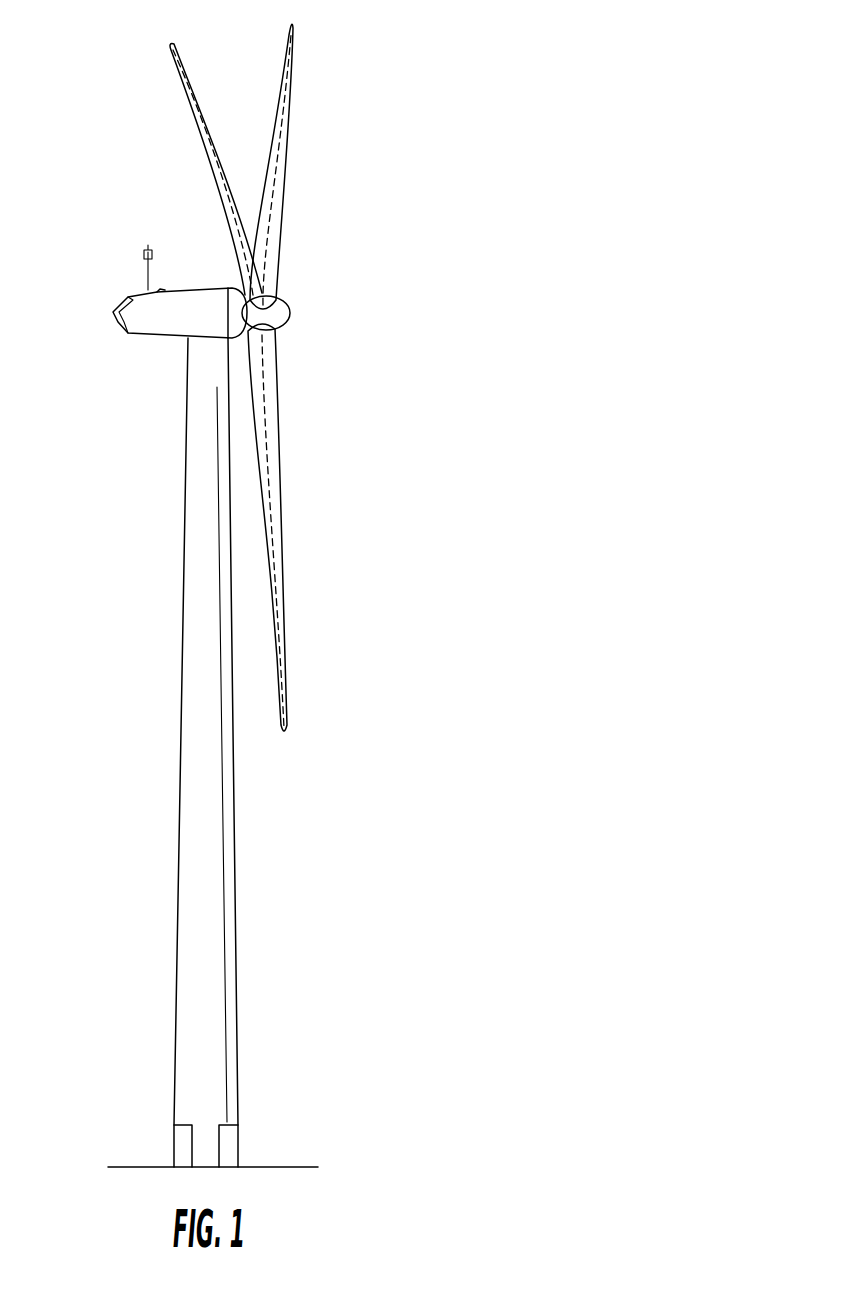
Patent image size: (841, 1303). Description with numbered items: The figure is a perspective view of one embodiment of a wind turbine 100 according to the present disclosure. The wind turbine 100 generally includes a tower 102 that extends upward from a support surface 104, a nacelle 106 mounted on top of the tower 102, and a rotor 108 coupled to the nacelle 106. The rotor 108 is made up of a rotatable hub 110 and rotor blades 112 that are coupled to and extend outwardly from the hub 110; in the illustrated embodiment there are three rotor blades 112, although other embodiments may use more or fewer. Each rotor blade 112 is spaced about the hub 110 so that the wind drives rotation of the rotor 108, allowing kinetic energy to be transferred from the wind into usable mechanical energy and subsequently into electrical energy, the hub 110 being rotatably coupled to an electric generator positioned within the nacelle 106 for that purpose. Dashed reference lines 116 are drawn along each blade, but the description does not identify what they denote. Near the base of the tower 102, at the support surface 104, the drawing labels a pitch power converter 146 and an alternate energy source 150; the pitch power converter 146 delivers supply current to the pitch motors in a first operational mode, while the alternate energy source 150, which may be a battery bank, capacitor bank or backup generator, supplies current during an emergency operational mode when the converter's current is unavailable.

The wind turbine 100 is at (424, 150).
The tower 102 is at (212, 817).
The support surface 104 is at (132, 1167).
The nacelle 106 is at (148, 342).
The rotor 108 is at (335, 266).
The rotatable hub 110 is at (289, 314).
The rotor blade 112 is at (275, 142).
The pitch axis 116 is at (212, 190).
The pitch power converter 146 is at (178, 1133).
The alternate energy source 150 is at (225, 1155).